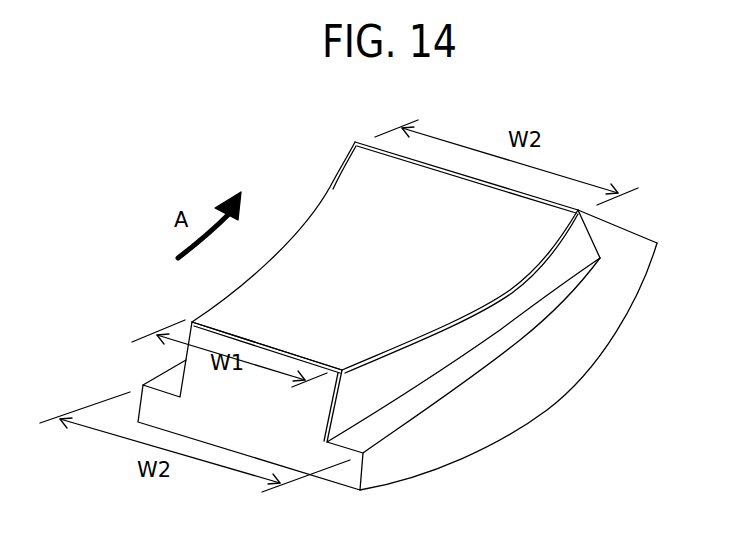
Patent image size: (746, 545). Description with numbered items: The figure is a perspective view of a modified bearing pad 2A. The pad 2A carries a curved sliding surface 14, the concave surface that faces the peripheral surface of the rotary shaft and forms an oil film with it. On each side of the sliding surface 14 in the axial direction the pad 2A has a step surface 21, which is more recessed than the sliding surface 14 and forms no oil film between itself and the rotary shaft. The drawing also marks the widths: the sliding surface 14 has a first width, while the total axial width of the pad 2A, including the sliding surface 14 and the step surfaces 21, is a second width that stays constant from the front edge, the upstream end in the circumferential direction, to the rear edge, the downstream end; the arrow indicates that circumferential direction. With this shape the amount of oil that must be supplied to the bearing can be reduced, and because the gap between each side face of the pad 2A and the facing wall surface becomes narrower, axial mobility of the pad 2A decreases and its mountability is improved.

The sliding surface 14 is at (305, 263).
The step surface 21 is at (402, 410).
The pad 2A is at (548, 420).